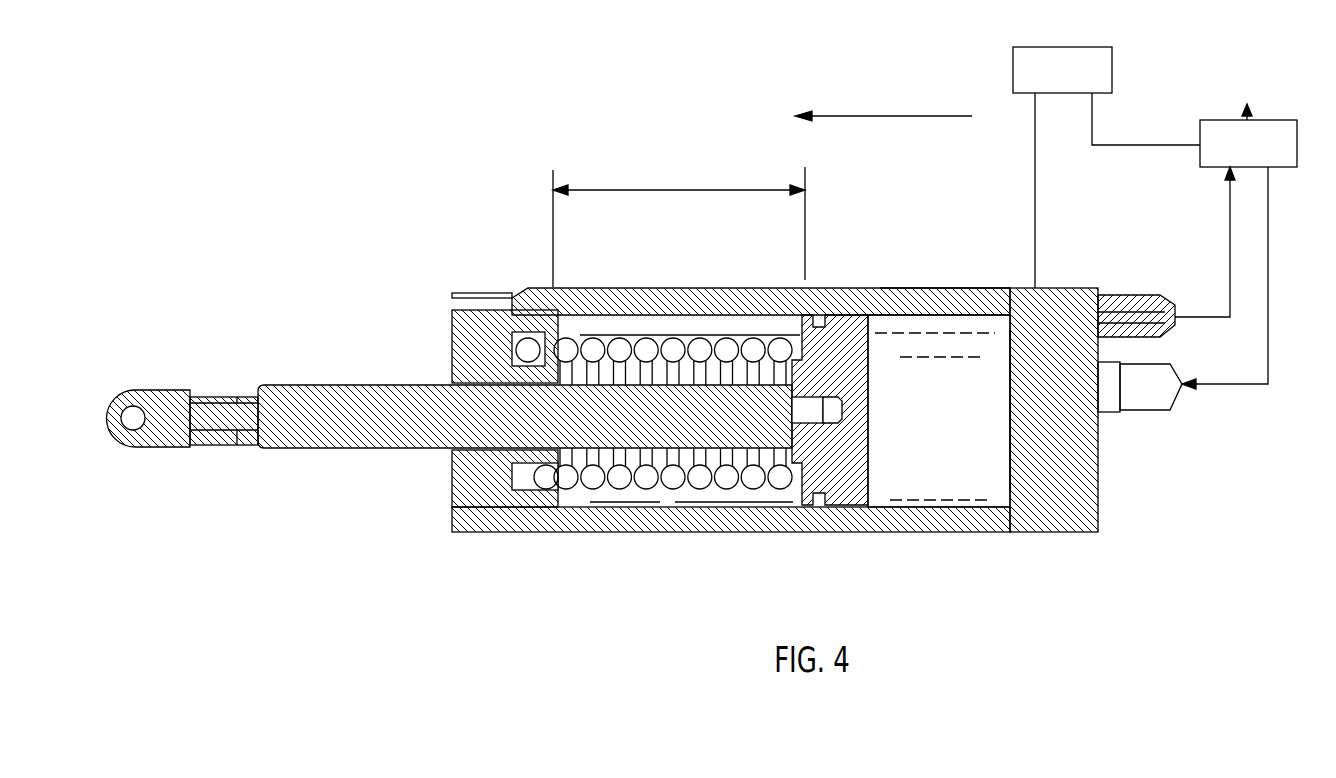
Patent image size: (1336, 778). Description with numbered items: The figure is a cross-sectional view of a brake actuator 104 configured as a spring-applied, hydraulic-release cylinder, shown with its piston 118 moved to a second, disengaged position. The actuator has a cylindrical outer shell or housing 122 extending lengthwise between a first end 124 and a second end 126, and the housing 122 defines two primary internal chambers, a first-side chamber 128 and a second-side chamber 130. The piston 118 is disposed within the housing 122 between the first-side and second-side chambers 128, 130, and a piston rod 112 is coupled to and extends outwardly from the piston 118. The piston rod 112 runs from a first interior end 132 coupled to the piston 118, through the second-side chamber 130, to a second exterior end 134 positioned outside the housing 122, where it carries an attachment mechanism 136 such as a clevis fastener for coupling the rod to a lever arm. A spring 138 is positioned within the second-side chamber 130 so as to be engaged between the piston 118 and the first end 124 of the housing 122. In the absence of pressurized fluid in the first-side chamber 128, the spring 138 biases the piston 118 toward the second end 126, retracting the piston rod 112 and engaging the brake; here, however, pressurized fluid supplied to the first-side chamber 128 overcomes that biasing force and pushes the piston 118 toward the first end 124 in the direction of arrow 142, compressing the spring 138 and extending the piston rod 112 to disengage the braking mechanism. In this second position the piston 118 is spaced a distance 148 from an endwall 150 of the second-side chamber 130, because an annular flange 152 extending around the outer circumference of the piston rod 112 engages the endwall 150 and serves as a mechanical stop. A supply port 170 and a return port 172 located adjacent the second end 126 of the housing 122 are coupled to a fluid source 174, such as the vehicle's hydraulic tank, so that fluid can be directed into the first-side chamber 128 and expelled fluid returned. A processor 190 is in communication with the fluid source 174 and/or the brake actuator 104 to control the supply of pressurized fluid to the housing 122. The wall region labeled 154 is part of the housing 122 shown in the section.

The brake actuator 104 is at (451, 160).
The piston rod 112 is at (365, 386).
The piston 118 is at (805, 332).
The housing 122 is at (710, 287).
The first end 124 is at (450, 316).
The second end 126 is at (1098, 518).
The first-side chamber 128 is at (945, 451).
The second-side chamber 130 is at (637, 487).
The first interior end 132 is at (790, 428).
The second exterior end 134 is at (108, 415).
The attachment mechanism 136 is at (160, 400).
The spring 138 is at (615, 345).
The arrow 142 is at (876, 116).
The distance 148 is at (668, 188).
The endwall 150 is at (530, 318).
The annular flange 152 is at (452, 460).
The housing wall 154 is at (922, 288).
The supply port 170 is at (1152, 412).
The return port 172 is at (1148, 295).
The fluid source 174 is at (1235, 157).
The processor 190 is at (1049, 84).